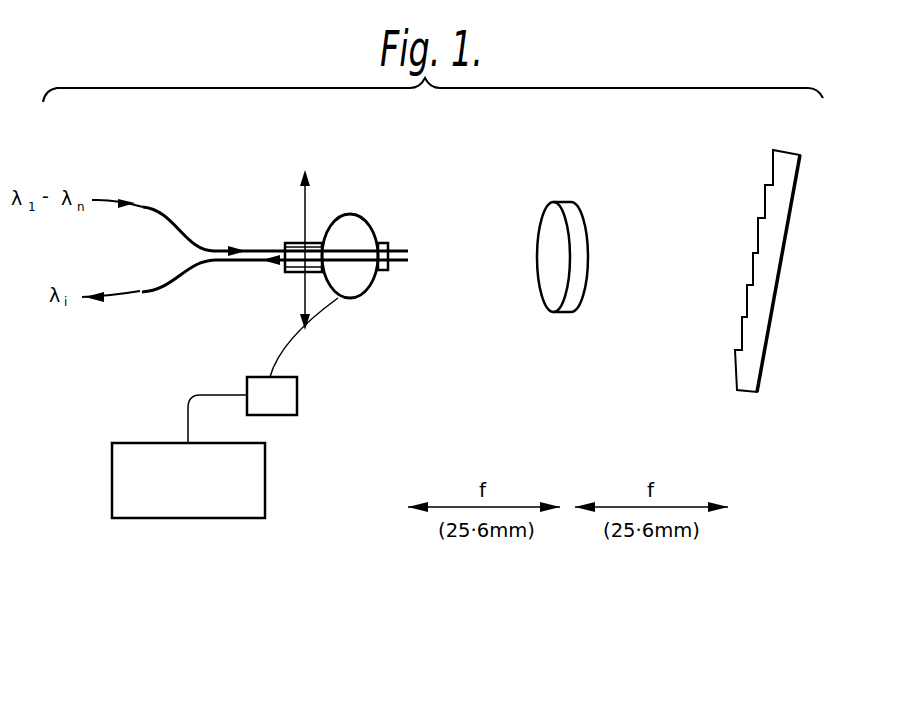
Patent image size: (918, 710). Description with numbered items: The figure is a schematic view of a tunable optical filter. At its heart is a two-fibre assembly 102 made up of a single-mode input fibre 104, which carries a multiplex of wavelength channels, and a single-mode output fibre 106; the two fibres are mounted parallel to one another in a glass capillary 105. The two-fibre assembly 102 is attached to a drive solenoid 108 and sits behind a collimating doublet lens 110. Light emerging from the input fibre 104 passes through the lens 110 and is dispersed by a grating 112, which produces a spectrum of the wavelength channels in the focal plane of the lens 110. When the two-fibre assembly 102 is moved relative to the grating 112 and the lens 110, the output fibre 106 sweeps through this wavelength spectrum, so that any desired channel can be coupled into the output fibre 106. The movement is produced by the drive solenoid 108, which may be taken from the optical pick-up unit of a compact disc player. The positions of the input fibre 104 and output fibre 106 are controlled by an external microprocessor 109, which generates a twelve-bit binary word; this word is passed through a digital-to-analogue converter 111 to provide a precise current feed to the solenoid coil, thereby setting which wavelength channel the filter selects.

The two-fibre assembly 102 is at (361, 170).
The single-mode input fibre 104 is at (178, 232).
The glass capillary 105 is at (381, 243).
The single-mode output fibre 106 is at (185, 267).
The drive solenoid 108 is at (370, 298).
The microprocessor 109 is at (112, 473).
The collimating doublet lens 110 is at (587, 232).
The digital-to-analogue converter 111 is at (297, 397).
The grating 112 is at (786, 222).